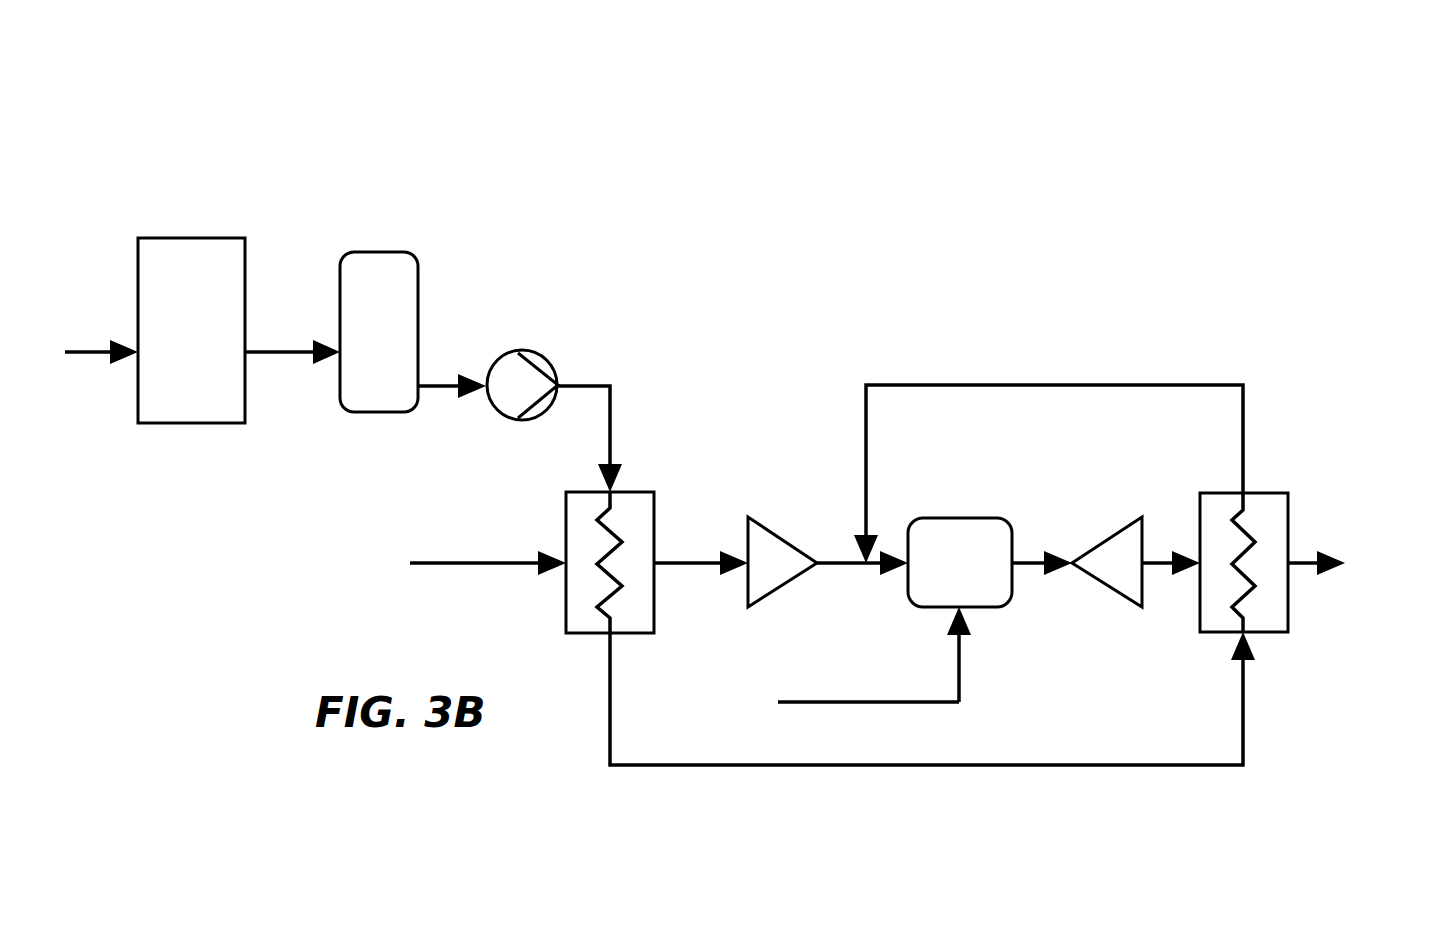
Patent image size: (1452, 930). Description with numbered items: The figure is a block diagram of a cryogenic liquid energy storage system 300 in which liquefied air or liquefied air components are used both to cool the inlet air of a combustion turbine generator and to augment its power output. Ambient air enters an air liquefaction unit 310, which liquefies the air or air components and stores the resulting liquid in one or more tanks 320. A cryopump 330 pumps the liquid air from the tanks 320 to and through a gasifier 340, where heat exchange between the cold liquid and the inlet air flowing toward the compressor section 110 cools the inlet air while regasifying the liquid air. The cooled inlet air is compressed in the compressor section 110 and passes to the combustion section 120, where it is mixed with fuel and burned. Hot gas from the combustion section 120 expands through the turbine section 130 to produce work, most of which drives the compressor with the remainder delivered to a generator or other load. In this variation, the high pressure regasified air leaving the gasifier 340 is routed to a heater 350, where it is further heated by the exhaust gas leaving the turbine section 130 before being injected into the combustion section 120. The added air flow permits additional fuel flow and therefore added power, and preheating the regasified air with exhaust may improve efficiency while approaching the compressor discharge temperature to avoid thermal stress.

The cryogenic liquid energy storage system 300 is at (1156, 255).
The air liquefaction unit 310 is at (138, 380).
The tanks 320 is at (340, 380).
The cryopump 330 is at (489, 400).
The gasifier 340 is at (566, 585).
The compressor section 110 is at (748, 578).
The combustion section 120 is at (909, 580).
The turbine section 130 is at (1097, 580).
The heater 350 is at (1200, 600).